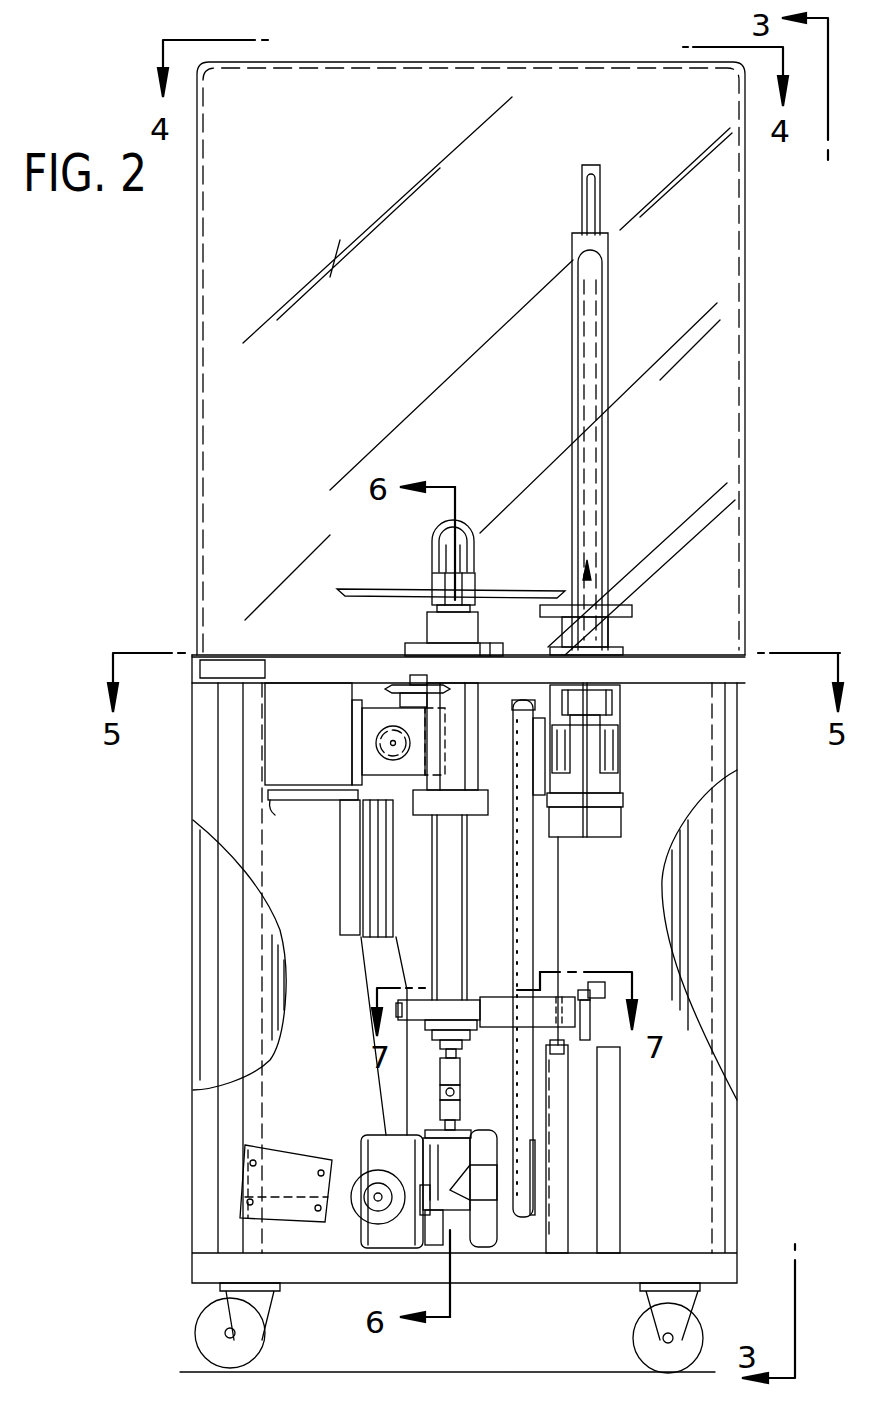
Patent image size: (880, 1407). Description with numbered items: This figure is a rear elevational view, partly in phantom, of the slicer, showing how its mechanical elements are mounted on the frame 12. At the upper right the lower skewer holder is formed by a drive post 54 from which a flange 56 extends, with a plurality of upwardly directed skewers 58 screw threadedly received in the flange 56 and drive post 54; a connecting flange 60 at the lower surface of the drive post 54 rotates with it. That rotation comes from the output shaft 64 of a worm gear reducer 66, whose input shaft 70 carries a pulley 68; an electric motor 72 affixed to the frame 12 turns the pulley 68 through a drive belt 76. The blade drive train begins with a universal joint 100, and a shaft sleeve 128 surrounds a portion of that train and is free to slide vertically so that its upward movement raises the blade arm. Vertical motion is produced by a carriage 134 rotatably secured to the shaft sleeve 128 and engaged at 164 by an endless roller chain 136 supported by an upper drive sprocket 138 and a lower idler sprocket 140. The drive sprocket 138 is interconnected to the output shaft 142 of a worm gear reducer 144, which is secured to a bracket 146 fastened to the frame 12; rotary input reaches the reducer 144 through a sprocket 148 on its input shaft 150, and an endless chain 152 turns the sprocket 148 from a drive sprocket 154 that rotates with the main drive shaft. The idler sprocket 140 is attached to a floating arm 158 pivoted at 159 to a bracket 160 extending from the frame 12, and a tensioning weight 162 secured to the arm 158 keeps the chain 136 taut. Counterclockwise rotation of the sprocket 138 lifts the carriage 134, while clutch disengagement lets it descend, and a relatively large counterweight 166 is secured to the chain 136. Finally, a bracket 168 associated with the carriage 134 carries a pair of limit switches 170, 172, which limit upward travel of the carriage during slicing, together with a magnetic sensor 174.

The frame 12 is at (275, 665).
The drive post 54 is at (612, 630).
The flange 56 is at (592, 612).
The skewers 58 is at (583, 580).
The connecting flange 60 is at (625, 652).
The output shaft 64 is at (598, 720).
The worm gear reducer 66 is at (612, 778).
The pulley 68 is at (522, 735).
The input shaft 70 is at (530, 770).
The electric motor 72 is at (468, 1240).
The drive belt 76 is at (527, 890).
The universal joint 100 is at (445, 1072).
The shaft sleeve 128 is at (445, 940).
The carriage 134 is at (450, 1024).
The endless roller chain 136 is at (365, 992).
The drive sprocket 138 is at (380, 743).
The idler sprocket 140 is at (378, 1213).
The output shaft 142 is at (380, 748).
The worm gear reducer 144 is at (372, 720).
The bracket 146 is at (275, 795).
The sprocket 148 is at (400, 688).
The input shaft 150 is at (412, 690).
The endless chain 152 is at (523, 690).
The drive sprocket 154 is at (600, 705).
The floating arm 158 is at (347, 1195).
The pivot 159 is at (425, 1200).
The bracket 160 is at (440, 1235).
The tensioning weight 162 is at (280, 1210).
The engagement point 164 is at (410, 1012).
The counterweight 166 is at (357, 845).
The bracket 168 is at (515, 1015).
The limit switch 170 is at (588, 1030).
The limit switch 172 is at (573, 990).
The magnetic sensor 174 is at (600, 985).